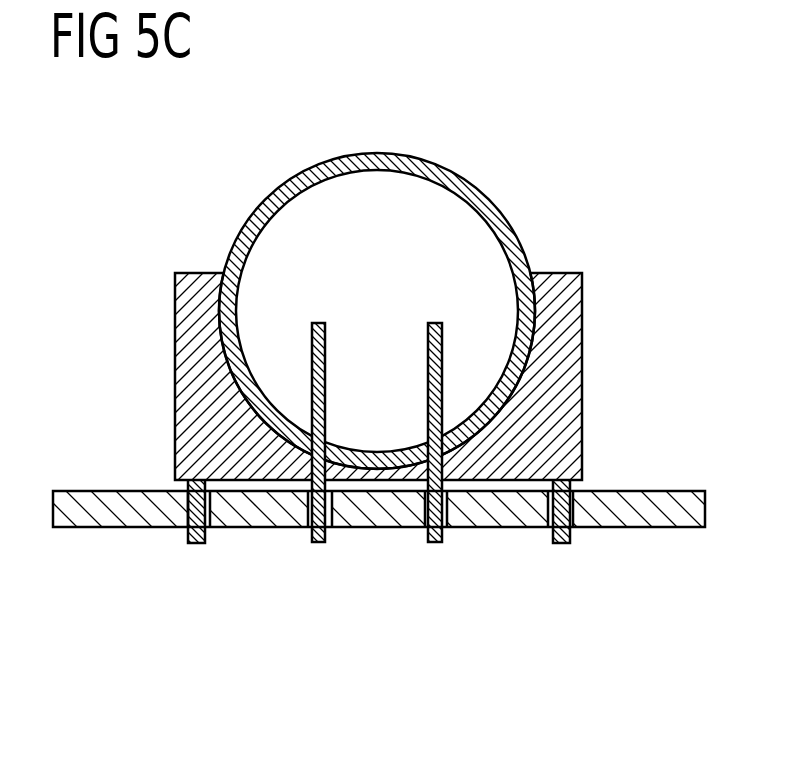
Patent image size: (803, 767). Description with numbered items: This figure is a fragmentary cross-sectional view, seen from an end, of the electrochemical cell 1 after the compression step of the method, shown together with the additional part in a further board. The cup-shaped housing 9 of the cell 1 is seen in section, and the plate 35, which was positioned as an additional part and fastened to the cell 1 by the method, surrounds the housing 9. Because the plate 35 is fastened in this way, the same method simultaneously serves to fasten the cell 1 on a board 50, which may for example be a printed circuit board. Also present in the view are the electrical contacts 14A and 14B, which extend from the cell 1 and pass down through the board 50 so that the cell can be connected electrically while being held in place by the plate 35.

The electrochemical cell 1 is at (413, 347).
The cup-shaped housing 9 is at (405, 153).
The plate 35 is at (582, 336).
The electrical contact 14A is at (320, 543).
The electrical contact 14B is at (434, 543).
The board 50 is at (78, 528).